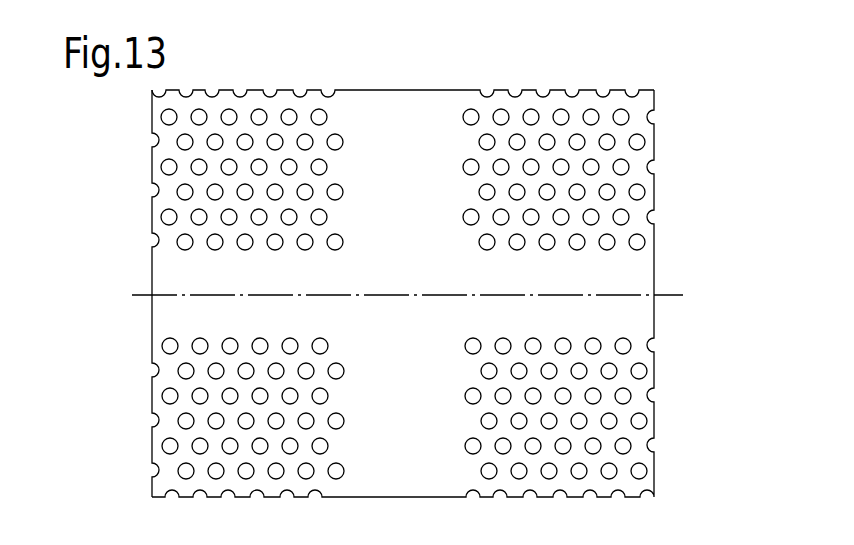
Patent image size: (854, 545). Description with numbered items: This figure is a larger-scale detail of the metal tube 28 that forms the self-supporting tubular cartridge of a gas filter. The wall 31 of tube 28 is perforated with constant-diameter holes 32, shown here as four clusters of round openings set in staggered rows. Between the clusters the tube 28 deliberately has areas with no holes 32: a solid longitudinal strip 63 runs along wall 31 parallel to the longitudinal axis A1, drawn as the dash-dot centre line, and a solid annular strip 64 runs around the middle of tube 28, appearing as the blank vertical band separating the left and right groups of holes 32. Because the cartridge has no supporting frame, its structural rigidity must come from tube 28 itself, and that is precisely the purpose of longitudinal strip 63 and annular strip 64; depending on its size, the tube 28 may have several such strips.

The metal tube 28 is at (460, 79).
The wall 31 is at (433, 97).
The holes 32 is at (259, 112).
The solid longitudinal strip 63 is at (172, 280).
The solid annular strip 64 is at (399, 122).
The longitudinal axis A1 is at (676, 291).